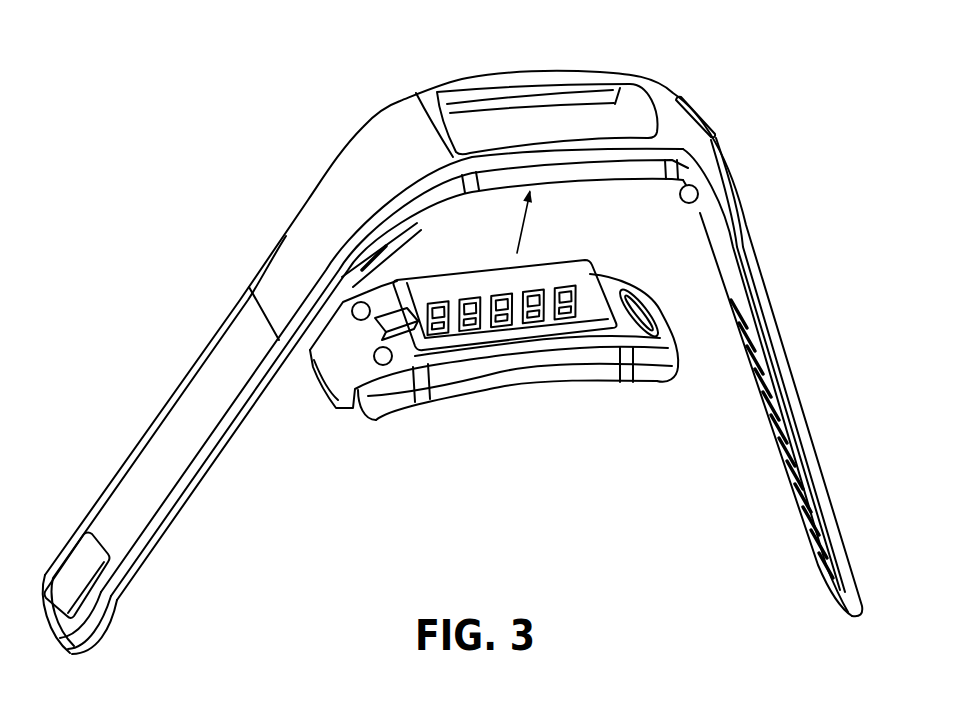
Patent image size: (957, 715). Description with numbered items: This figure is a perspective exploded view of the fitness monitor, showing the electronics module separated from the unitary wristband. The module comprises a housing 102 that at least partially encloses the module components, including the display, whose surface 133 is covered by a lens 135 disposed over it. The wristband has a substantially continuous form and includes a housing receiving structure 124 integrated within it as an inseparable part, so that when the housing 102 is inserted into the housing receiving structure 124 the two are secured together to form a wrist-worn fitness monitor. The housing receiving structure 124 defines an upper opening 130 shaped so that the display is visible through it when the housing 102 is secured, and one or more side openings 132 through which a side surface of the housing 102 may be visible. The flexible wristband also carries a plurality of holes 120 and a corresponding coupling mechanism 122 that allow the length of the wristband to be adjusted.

The housing 102 is at (530, 252).
The holes 120 is at (800, 500).
The coupling mechanism 122 is at (63, 597).
The housing receiving structure 124 is at (445, 83).
The upper opening 130 is at (515, 118).
The side opening 132 is at (483, 197).
The surface of the display 133 is at (437, 280).
The lens 135 is at (548, 295).